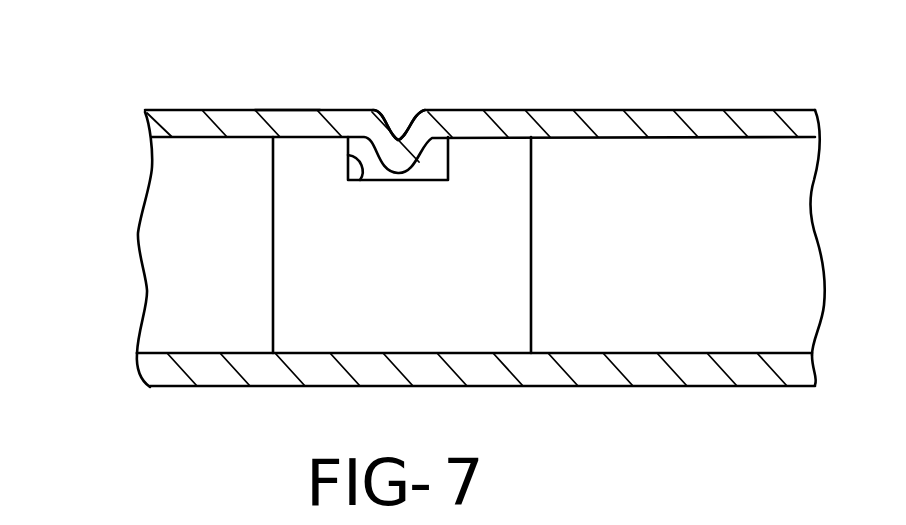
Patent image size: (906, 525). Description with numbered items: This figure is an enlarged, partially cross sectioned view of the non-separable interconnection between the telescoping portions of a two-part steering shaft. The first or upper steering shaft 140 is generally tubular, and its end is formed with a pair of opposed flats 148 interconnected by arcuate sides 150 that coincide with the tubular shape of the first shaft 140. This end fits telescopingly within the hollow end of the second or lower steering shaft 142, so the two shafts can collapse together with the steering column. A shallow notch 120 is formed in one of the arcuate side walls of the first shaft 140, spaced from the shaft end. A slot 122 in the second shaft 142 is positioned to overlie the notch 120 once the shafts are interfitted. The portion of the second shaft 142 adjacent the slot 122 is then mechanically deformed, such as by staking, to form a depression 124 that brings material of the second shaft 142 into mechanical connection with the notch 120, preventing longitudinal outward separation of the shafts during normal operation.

The notch 120 is at (360, 180).
The slot 122 is at (396, 133).
The depression 124 is at (427, 163).
The first steering shaft 140 is at (643, 330).
The second steering shaft 142 is at (675, 64).
The flats 148 is at (170, 288).
The arcuate sides 150 is at (285, 130).